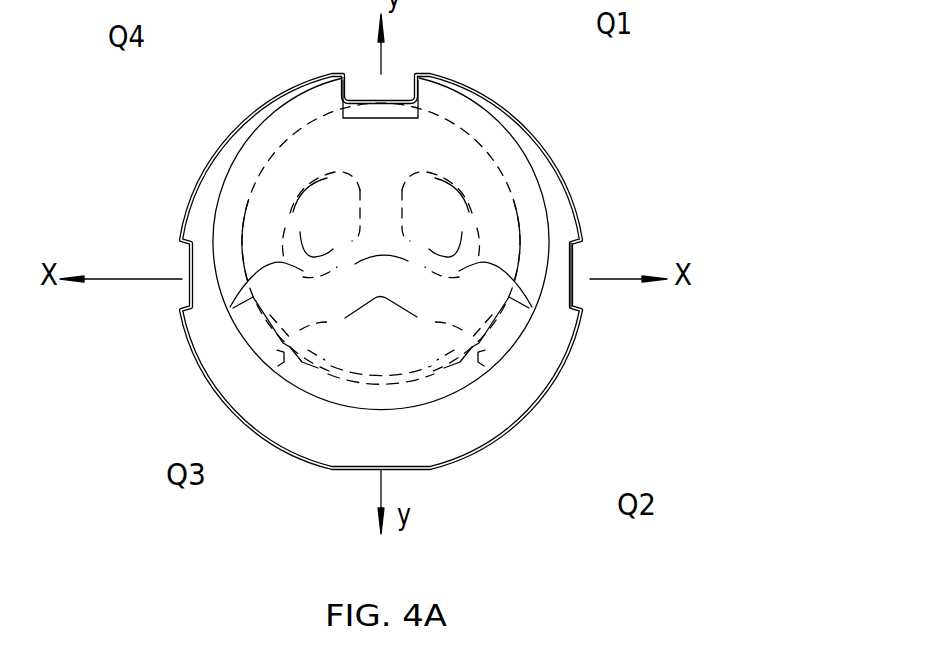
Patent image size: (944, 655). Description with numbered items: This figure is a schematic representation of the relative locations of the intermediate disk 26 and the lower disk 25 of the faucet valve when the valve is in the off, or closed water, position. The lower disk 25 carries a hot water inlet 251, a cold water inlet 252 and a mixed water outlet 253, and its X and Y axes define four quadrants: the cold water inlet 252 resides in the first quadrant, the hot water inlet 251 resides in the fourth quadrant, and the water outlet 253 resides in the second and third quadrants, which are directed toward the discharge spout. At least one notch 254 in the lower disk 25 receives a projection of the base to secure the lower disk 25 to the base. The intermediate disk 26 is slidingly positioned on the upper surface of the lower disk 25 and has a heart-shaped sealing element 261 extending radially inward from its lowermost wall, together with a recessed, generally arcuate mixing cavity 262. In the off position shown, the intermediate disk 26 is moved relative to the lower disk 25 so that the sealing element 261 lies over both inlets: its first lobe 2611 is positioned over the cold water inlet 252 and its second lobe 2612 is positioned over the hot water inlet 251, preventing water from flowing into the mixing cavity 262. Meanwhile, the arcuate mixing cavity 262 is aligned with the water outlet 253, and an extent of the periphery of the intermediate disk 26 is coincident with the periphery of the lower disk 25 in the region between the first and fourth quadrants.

The lower disk 25 is at (262, 393).
The intermediate disk 26 is at (230, 238).
The hot water inlet 251 is at (337, 212).
The cold water inlet 252 is at (427, 213).
The mixed water outlet 253 is at (392, 343).
The notch 254 is at (577, 282).
The sealing element 261 is at (388, 157).
The mixing cavity 262 is at (500, 247).
The first lobe 2611 is at (497, 340).
The second lobe 2612 is at (233, 305).